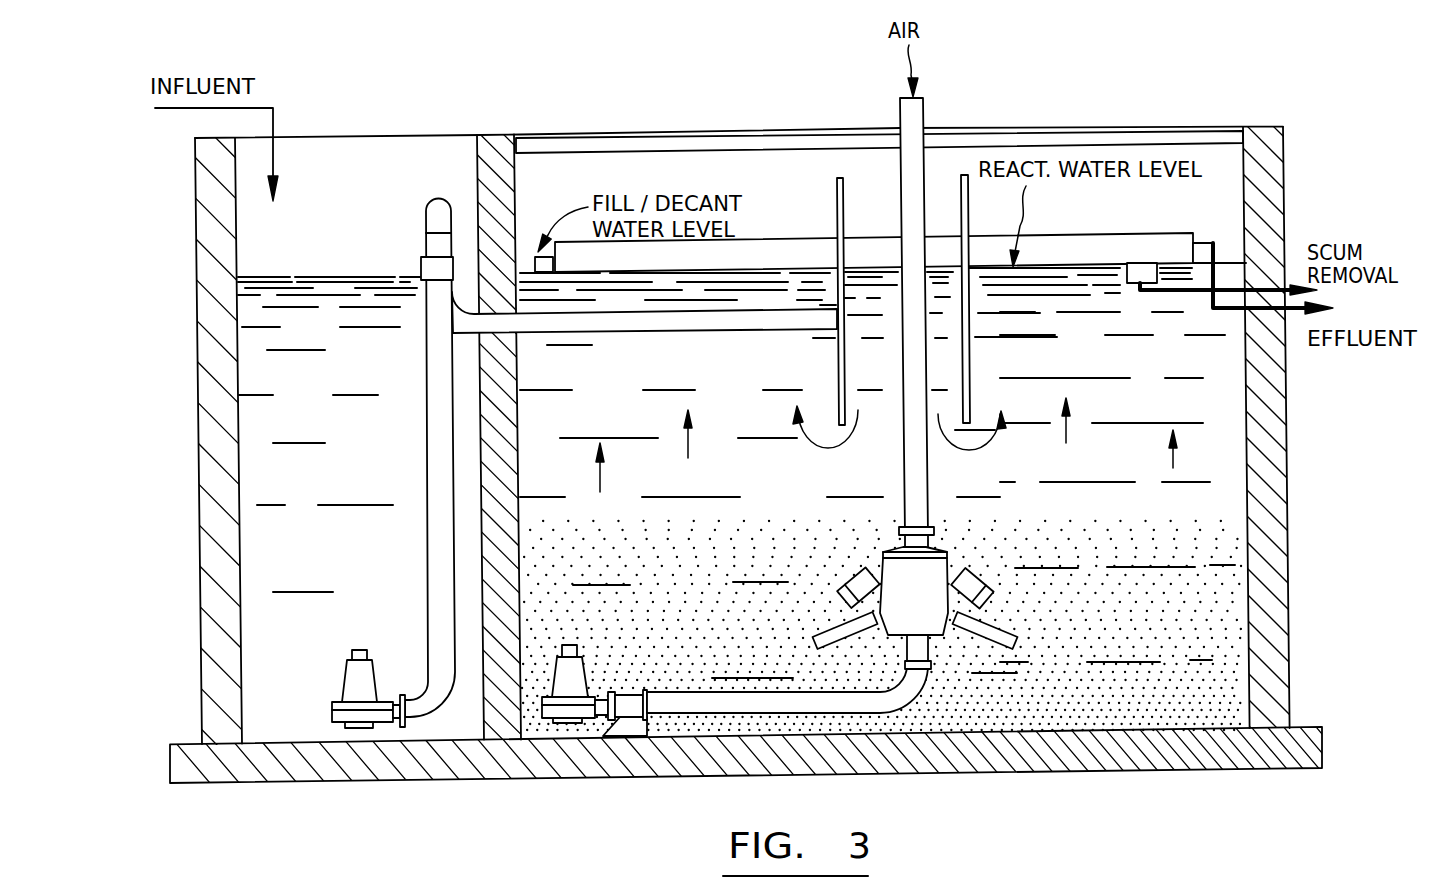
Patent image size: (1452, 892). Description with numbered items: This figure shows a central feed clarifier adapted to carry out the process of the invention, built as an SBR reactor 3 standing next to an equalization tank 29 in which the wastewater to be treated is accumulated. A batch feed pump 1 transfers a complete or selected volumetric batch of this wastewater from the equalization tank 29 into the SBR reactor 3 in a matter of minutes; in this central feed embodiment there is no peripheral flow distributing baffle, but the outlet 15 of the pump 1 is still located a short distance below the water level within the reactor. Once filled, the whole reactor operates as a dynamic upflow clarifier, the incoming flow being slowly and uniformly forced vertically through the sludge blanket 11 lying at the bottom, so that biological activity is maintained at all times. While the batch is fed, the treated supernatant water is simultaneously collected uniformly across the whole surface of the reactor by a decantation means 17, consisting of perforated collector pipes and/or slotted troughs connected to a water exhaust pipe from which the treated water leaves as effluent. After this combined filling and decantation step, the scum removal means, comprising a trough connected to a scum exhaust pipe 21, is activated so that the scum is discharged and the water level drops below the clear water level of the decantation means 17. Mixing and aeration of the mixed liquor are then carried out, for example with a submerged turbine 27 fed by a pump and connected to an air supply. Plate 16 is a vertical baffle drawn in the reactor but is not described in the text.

The batch feed pump 1 is at (367, 683).
The SBR reactor 3 is at (516, 184).
The sludge blanket 11 is at (1127, 628).
The outlet 15 is at (603, 334).
The baffle plate 16 is at (903, 298).
The decantation means 17 is at (1195, 235).
The scum exhaust pipe 21 is at (1133, 275).
The submerged turbine 27 is at (927, 573).
The equalization tank 29 is at (350, 477).